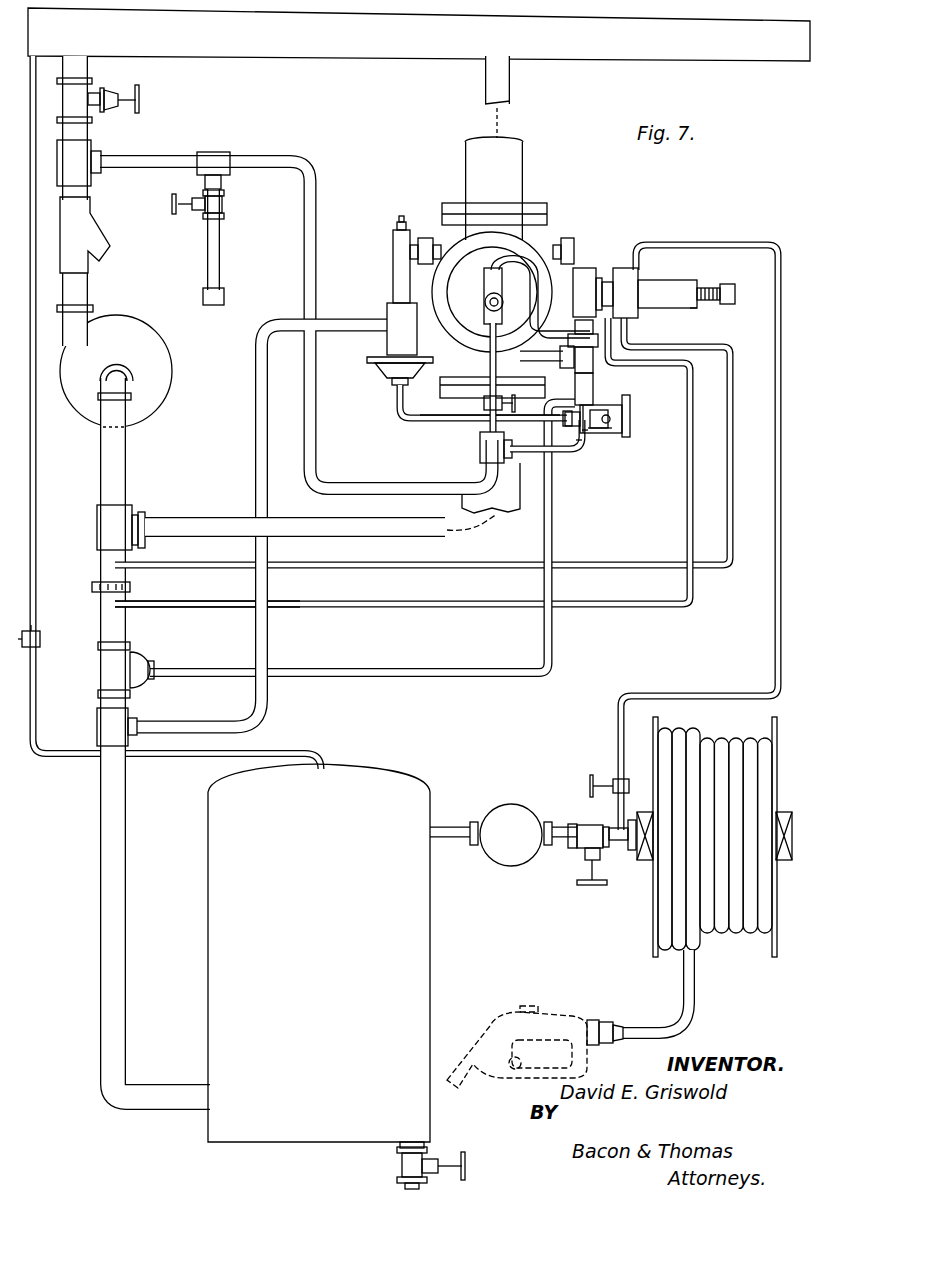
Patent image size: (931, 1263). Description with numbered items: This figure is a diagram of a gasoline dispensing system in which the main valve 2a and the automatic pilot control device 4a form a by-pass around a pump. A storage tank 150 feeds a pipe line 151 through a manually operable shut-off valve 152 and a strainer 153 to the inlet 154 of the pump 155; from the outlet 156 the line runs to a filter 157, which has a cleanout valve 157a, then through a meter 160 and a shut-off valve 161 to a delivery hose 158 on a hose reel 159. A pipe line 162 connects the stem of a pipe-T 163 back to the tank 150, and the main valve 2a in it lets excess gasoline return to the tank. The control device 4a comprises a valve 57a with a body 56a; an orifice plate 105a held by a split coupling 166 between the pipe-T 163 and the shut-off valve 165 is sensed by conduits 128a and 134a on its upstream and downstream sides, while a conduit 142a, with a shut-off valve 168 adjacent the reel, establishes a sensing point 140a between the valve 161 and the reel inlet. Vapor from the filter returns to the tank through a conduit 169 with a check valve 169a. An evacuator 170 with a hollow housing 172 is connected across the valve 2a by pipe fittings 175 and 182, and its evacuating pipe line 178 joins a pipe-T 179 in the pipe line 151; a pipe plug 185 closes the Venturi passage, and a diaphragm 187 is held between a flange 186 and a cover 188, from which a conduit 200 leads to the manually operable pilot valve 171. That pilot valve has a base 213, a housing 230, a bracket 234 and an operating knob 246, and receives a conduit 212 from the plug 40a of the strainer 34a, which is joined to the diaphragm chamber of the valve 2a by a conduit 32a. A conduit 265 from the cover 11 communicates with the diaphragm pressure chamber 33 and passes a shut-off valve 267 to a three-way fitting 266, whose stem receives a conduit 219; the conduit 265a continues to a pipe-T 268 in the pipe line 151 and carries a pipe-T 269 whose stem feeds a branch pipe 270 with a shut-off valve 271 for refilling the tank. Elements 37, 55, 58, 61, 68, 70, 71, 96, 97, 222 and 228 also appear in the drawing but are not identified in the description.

The storage tank 150 is at (294, 48).
The pipe line 151 is at (78, 74).
The manually operable shut-off valve 152 is at (118, 99).
The strainer 153 is at (92, 241).
The inlet 154 is at (92, 311).
The pump 155 is at (157, 368).
The outlet 156 is at (134, 378).
The gasoline filter 157 is at (221, 899).
The valve 157a is at (400, 1163).
The delivery hose 158 is at (693, 988).
The hose reel 159 is at (655, 951).
The meter 160 is at (512, 808).
The manually operable shut-off valve 161 is at (587, 862).
The pipe line 162 is at (197, 522).
The pipe-T 163 is at (108, 525).
The shut-off valve 165 is at (136, 665).
The split coupling 166 is at (131, 588).
The manually operable shut-off valve 168 is at (614, 782).
The conduit 169 is at (35, 484).
The check valve 169a is at (37, 646).
The evacuator 170 is at (392, 292).
The pilot valve 171 is at (645, 399).
The housing 172 is at (400, 263).
The pipe fittings 175 is at (476, 388).
The evacuating pipe line 178 is at (262, 440).
The pipe-T 179 is at (107, 733).
The pipe fittings 182 is at (445, 207).
The pipe plug 185 is at (434, 222).
The flange 186 is at (383, 359).
The flexible diaphragm 187 is at (383, 365).
The cover 188 is at (381, 374).
The conduit 200 is at (461, 421).
The conduit 212 is at (587, 401).
The base 213 is at (593, 440).
The conduit 219 is at (572, 453).
The valve seat 222 is at (583, 450).
The line 228 is at (348, 666).
The hollow housing 230 is at (599, 437).
The bracket 234 is at (604, 436).
The operating knob 246 is at (631, 417).
The conduit 265 is at (492, 369).
The conduit 265a is at (310, 297).
The three-way fitting 266 is at (480, 451).
The manually operable shut-off valve 267 is at (482, 404).
The pipe-T 268 is at (84, 153).
The pipe-T 269 is at (210, 160).
The branch pipe 270 is at (214, 251).
The shut-off valve 271 is at (219, 211).
The main valve 2a is at (537, 236).
The automatic pilot control device 4a is at (660, 279).
The cover 11 is at (434, 283).
The conduit 32a is at (504, 259).
The diaphragm pressure chamber 33 is at (458, 322).
The strainer 34a is at (594, 386).
The fitting 37 is at (556, 356).
The plug 40a is at (579, 388).
The tube 55 is at (612, 345).
The body 56a is at (587, 297).
The valve 57a is at (596, 270).
The passage 58 is at (576, 268).
The nipple 61 is at (607, 280).
The block 68 is at (625, 279).
The connection 70 is at (688, 306).
The tube 71 is at (629, 328).
The nut 96 is at (731, 293).
The screw 97 is at (704, 288).
The orifice plate 105a is at (113, 603).
The conduit 128a is at (623, 558).
The conduit 134a is at (478, 606).
The sensing point 140a is at (622, 841).
The conduit 142a is at (776, 651).